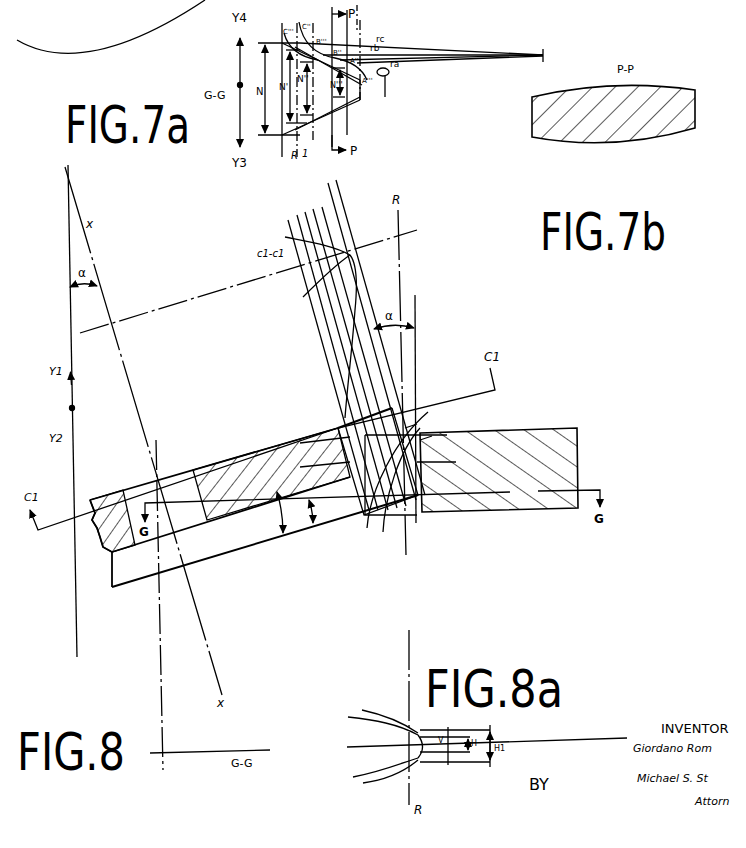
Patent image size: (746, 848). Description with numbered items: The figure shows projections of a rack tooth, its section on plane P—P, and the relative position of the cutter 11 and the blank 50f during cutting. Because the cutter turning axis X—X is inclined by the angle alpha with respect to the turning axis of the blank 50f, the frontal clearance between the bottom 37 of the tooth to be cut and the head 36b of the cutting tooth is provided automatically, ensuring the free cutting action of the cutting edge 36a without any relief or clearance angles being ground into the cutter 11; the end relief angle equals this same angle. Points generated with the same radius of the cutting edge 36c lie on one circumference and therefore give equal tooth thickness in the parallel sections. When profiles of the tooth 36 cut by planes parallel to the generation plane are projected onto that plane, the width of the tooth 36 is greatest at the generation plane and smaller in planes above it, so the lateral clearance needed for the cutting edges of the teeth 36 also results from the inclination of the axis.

In FIG. 8, the cutter 11 is at (238, 458).
In FIG. 8, the tooth 36 is at (337, 426).
In FIG. 8, the cutting edge 36a is at (417, 422).
In FIG. 8, the head of the cutting tooth 36b is at (412, 428).
In FIG. 7A, the cutting edge 36c is at (390, 73).
In FIG. 8, the bottom of the tooth to be cut 37 is at (430, 434).
In FIG. 8, the blank 50f is at (520, 436).